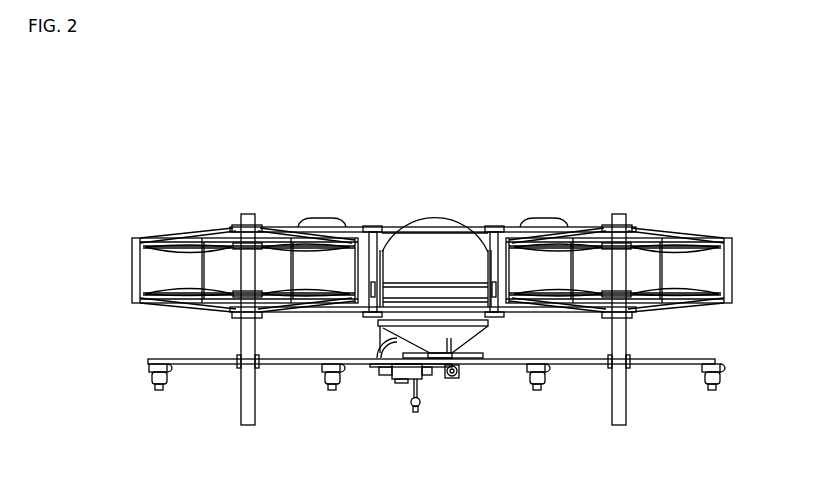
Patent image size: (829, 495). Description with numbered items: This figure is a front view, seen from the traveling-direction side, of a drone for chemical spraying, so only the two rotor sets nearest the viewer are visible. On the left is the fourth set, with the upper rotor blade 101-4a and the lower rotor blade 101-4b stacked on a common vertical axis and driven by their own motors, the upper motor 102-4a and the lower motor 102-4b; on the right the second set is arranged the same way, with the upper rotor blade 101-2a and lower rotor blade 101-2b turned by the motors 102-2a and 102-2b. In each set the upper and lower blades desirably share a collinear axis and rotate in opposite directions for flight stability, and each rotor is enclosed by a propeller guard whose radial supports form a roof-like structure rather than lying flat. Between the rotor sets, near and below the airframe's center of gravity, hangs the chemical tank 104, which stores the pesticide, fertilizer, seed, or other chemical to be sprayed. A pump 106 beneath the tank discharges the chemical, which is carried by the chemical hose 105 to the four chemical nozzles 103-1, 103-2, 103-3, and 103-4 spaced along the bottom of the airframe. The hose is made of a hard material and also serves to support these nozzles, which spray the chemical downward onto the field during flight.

The rotor blade 101-4a is at (182, 248).
The rotor blade 101-4b is at (182, 296).
The motor 102-4a is at (258, 230).
The motor 102-4b is at (232, 289).
The rotor blade 101-2a is at (684, 248).
The rotor blade 101-2b is at (688, 296).
The motor 102-2a is at (606, 230).
The motor 102-2b is at (632, 289).
The chemical nozzle 103-1 is at (711, 393).
The chemical nozzle 103-2 is at (538, 393).
The chemical nozzle 103-3 is at (332, 393).
The chemical nozzle 103-4 is at (157, 393).
The chemical tank 104 is at (482, 338).
The chemical hose 105 is at (206, 366).
The pump 106 is at (391, 380).